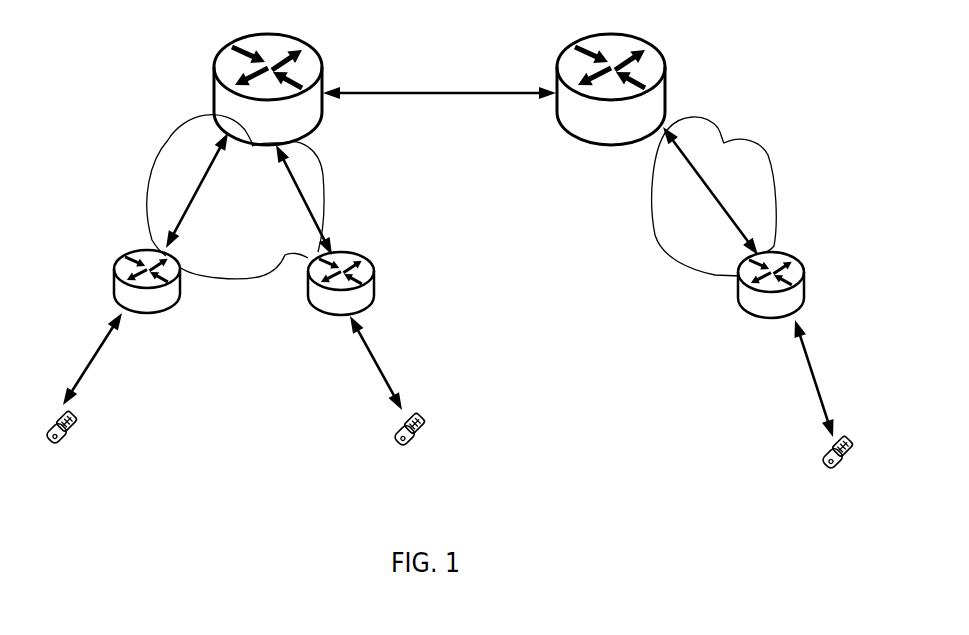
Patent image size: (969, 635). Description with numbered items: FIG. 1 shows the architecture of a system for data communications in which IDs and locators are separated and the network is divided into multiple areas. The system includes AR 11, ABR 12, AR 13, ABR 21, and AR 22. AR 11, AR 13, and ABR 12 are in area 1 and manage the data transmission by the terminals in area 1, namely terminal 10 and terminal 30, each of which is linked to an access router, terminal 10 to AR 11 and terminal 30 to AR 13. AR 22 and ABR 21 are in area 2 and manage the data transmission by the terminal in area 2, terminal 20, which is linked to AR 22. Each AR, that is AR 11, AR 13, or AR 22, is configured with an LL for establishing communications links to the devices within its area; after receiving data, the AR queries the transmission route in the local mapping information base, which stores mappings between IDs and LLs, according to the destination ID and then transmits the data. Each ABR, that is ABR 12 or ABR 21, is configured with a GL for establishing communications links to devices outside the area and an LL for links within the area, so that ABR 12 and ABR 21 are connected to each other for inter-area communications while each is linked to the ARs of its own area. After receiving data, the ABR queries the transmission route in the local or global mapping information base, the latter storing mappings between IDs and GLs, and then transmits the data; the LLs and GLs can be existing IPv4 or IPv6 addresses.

The ABR 12 is at (319, 89).
The ABR 21 is at (586, 107).
The AR 11 is at (174, 300).
The AR 13 is at (396, 293).
The AR 22 is at (732, 301).
The terminal 10 is at (90, 395).
The terminal 30 is at (407, 400).
The terminal 20 is at (792, 409).
The area 1 is at (235, 197).
The area 2 is at (678, 257).